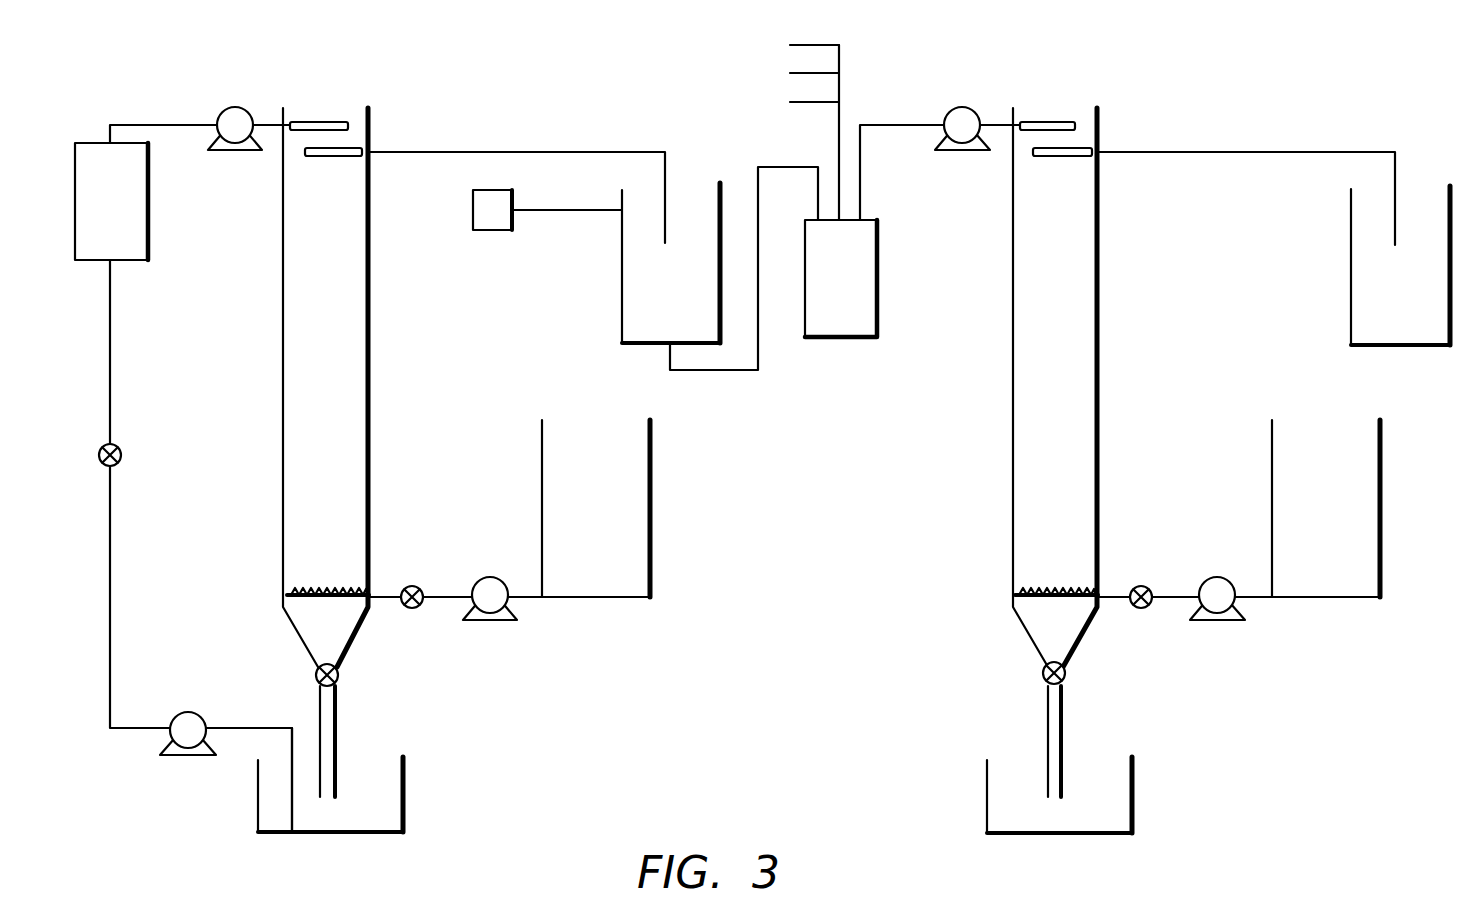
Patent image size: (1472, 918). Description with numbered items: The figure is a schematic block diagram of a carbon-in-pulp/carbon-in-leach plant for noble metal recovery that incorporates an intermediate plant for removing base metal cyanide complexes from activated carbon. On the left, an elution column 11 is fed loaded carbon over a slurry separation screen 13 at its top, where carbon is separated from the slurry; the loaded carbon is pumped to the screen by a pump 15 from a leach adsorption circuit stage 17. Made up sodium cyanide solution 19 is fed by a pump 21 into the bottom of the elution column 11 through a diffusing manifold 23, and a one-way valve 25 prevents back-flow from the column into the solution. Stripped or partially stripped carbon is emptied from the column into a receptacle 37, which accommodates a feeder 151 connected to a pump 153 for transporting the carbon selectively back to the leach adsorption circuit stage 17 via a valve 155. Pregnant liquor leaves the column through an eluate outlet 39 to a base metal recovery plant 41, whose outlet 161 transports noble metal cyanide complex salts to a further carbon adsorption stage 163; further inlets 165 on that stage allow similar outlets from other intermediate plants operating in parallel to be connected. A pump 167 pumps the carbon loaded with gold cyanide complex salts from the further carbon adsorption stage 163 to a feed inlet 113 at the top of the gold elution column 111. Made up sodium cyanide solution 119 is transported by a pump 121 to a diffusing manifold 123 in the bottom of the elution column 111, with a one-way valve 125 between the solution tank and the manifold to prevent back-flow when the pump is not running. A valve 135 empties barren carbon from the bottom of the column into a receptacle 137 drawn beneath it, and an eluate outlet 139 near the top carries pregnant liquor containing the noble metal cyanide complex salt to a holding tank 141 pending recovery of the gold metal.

The elution column 11 is at (283, 278).
The slurry separation screen 13 is at (335, 121).
The pump 15 is at (235, 107).
The leach adsorption circuit stage 17 is at (148, 200).
The made up sodium cyanide solution 19 is at (650, 530).
The pump 21 is at (490, 577).
The diffusing manifold 23 is at (300, 592).
The one-way valve 25 is at (413, 585).
The receptacle 37 is at (258, 803).
The eluate outlet 39 is at (360, 150).
The base metal recovery plant 41 is at (622, 273).
The elution column 111 is at (1013, 477).
The feed inlet 113 is at (1062, 121).
The made up sodium cyanide solution 119 is at (1380, 531).
The pump 121 is at (1217, 577).
The diffusing manifold 123 is at (1030, 592).
The one-way valve 125 is at (1142, 585).
The valve 135 is at (1065, 673).
The collection vessel 137 is at (987, 803).
The eluate outlet 139 is at (1090, 150).
The holding tank 141 is at (1351, 273).
The feeder 151 is at (298, 745).
The pump 153 is at (188, 712).
The valve 155 is at (121, 455).
The outlet 161 is at (733, 370).
The further carbon adsorption stage 163 is at (877, 278).
The further inlets 165 is at (805, 102).
The pump 167 is at (962, 107).